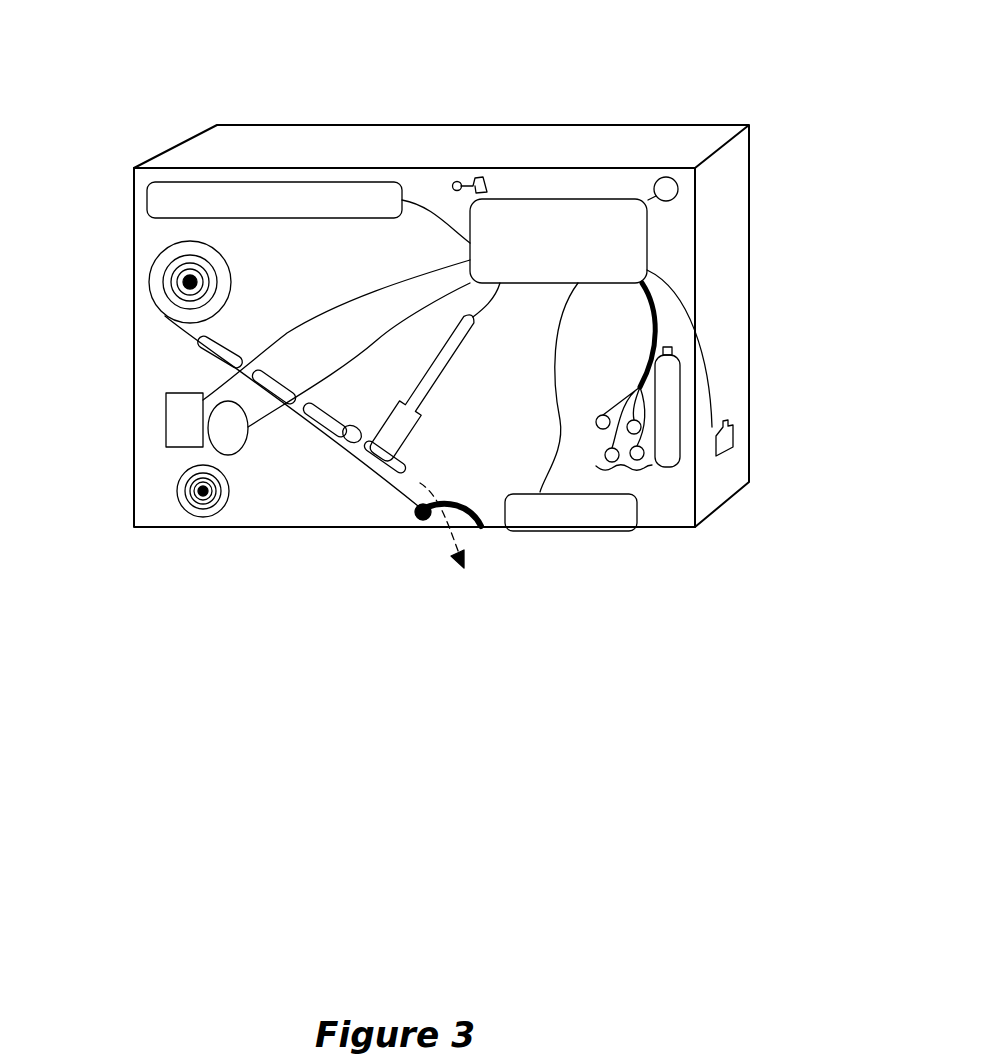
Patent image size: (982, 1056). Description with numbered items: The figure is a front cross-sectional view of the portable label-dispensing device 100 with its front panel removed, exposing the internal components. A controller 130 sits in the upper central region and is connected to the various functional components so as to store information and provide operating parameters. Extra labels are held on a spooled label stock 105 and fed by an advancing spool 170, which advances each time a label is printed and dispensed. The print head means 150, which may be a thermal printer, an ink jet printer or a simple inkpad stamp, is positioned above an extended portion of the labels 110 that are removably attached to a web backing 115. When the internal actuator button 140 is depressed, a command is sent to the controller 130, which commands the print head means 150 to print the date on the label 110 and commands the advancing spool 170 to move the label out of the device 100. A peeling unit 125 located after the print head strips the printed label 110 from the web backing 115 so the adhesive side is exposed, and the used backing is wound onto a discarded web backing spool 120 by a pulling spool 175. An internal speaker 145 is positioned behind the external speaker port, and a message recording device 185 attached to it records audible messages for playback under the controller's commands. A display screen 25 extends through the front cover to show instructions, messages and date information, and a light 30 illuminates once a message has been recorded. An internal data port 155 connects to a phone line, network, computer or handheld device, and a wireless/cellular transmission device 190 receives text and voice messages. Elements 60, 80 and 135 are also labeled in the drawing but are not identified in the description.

The portable label-dispensing device 100 is at (626, 84).
The display screen 25 is at (160, 197).
The pulling spool 175 is at (417, 187).
The wireless/cellular transmission device 190 is at (483, 178).
The light 30 is at (667, 190).
The controller 130 is at (630, 247).
The spooled label stock 105 is at (163, 267).
The advancing spool 170 is at (183, 287).
The message recording device 185 is at (222, 443).
The internal speaker 145 is at (180, 428).
The labels 110 is at (345, 445).
The web backing 115 is at (358, 447).
The discarded web backing spool 120 is at (185, 500).
The print head means 150 is at (405, 440).
The peeling unit 125 is at (481, 526).
The direction of movement 60 is at (447, 555).
The slot 80 is at (617, 517).
The internal actuator button 140 is at (633, 470).
The battery indicator 135 is at (677, 447).
The internal data port 155 is at (735, 433).